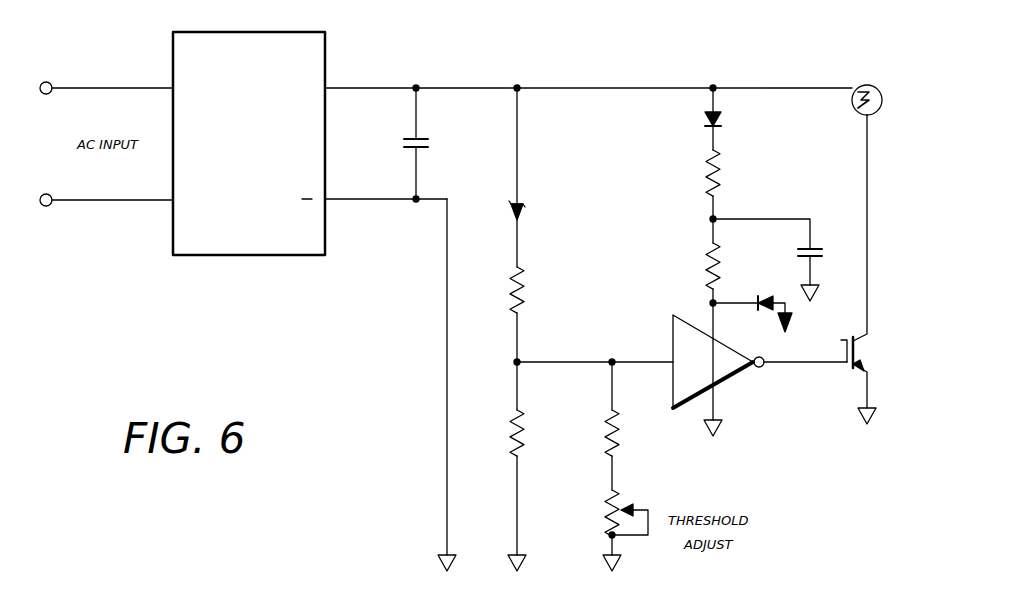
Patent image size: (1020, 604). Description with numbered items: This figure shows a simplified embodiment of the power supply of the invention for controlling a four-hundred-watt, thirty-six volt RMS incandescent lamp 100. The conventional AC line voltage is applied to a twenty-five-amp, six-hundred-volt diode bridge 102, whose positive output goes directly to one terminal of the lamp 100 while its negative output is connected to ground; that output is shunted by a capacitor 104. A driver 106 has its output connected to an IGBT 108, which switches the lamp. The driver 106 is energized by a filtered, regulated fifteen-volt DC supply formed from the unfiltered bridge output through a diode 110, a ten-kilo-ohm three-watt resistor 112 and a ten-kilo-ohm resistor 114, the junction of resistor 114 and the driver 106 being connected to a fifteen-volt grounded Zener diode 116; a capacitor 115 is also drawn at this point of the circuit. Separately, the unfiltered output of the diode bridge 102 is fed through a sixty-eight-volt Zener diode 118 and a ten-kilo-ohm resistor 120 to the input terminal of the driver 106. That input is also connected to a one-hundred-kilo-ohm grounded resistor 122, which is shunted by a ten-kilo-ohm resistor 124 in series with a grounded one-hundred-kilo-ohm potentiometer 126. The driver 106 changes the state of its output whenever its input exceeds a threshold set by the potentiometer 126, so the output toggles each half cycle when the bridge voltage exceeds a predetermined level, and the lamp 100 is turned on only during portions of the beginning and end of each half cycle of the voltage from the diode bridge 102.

The incandescent lamp 100 is at (867, 85).
The diode bridge 102 is at (311, 32).
The capacitor 104 is at (428, 138).
The driver 106 is at (733, 374).
The IGBT 108 is at (866, 352).
The diode 110 is at (722, 124).
The resistor 112 is at (722, 171).
The resistor 114 is at (722, 263).
The capacitor 115 is at (834, 252).
The Zener diode 116 is at (776, 296).
The Zener diode 118 is at (525, 200).
The resistor 120 is at (526, 289).
The resistor 122 is at (531, 431).
The resistor 124 is at (624, 431).
The potentiometer 126 is at (649, 500).